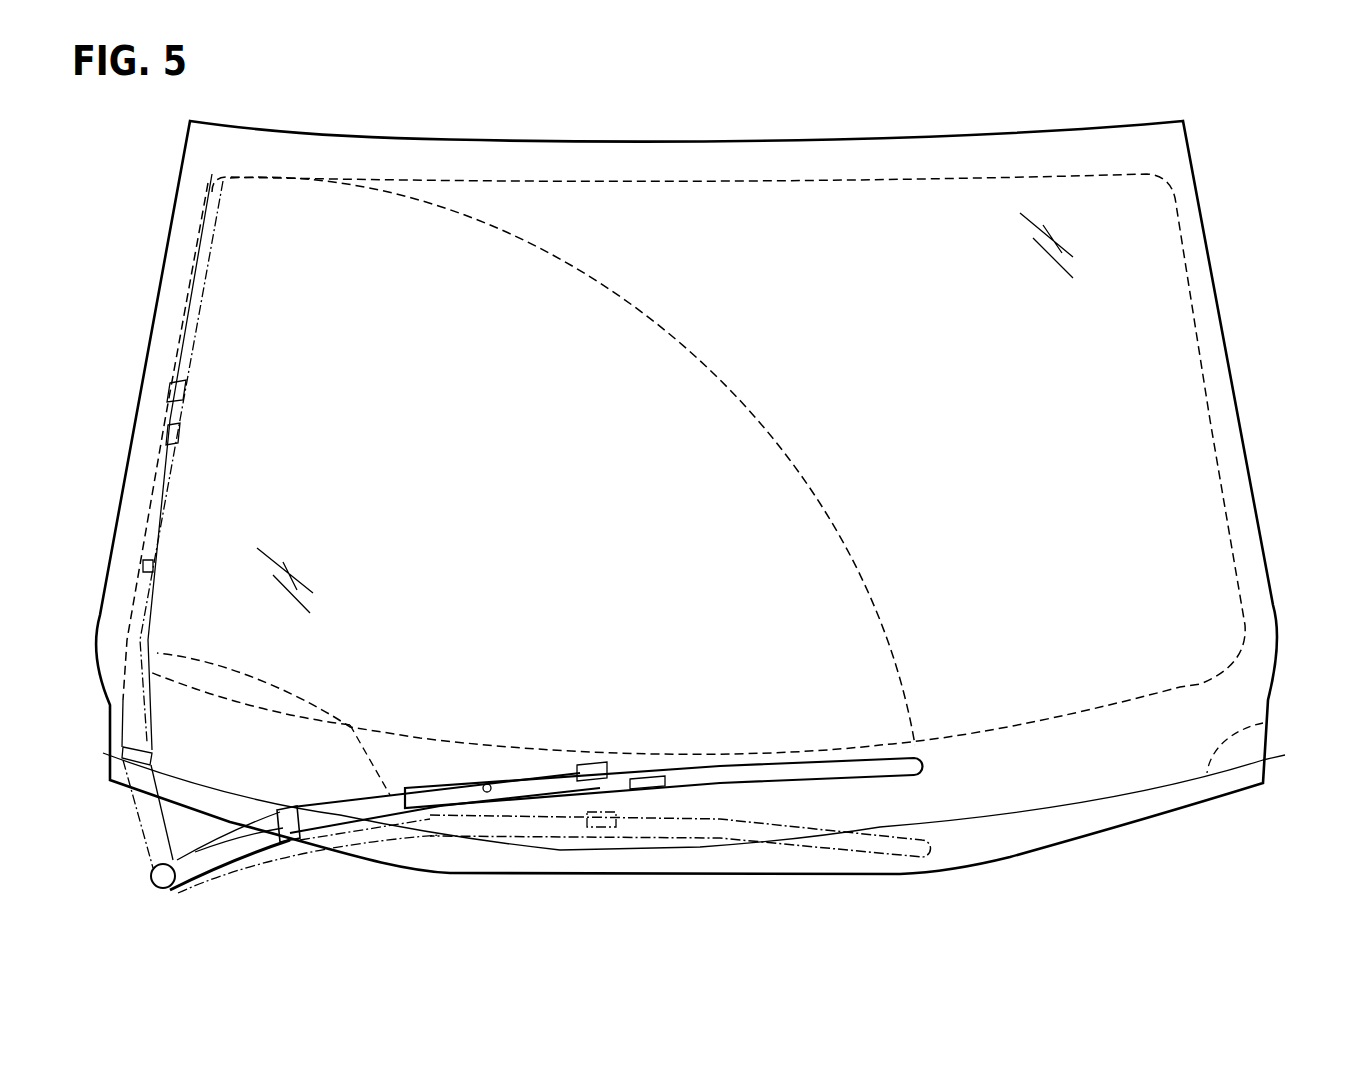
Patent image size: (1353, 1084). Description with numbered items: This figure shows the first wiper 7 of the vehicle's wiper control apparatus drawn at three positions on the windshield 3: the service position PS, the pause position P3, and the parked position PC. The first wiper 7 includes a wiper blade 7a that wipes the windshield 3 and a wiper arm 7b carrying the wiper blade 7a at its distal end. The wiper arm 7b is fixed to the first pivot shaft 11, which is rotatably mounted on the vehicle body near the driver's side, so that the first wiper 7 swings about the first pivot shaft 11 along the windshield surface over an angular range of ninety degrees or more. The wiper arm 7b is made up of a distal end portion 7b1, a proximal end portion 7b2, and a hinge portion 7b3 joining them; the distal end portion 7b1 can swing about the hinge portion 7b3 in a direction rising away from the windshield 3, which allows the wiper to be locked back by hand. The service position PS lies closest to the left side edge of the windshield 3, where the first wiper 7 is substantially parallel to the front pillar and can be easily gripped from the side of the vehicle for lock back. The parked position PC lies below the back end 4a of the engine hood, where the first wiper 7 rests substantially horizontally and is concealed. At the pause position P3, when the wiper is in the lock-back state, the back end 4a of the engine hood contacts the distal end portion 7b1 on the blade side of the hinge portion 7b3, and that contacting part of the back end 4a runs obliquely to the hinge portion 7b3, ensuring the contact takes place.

The windshield 3 is at (958, 213).
The back end of the engine hood 4a is at (1265, 722).
The first wiper 7 is at (532, 794).
The wiper blade 7a is at (702, 773).
The wiper arm 7b is at (385, 792).
The distal end portion 7b1 is at (370, 805).
The proximal end portion 7b2 is at (237, 843).
The hinge portion 7b3 is at (296, 835).
The first pivot shaft 11 is at (158, 887).
The service position PS is at (228, 221).
The parked position PC is at (720, 855).
The pause position P3 is at (838, 743).